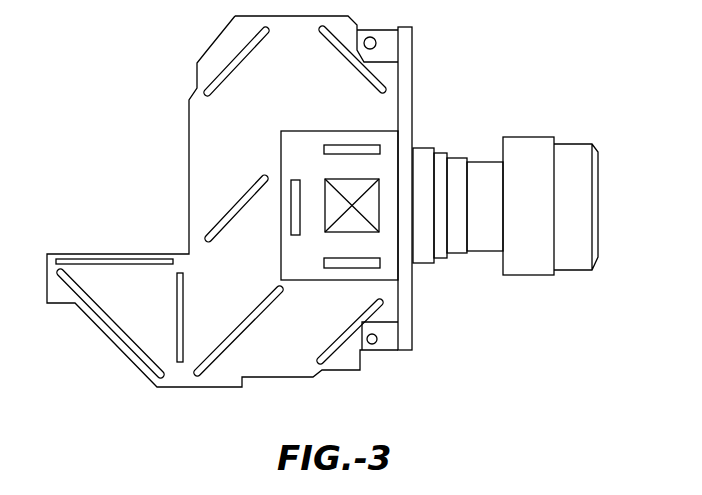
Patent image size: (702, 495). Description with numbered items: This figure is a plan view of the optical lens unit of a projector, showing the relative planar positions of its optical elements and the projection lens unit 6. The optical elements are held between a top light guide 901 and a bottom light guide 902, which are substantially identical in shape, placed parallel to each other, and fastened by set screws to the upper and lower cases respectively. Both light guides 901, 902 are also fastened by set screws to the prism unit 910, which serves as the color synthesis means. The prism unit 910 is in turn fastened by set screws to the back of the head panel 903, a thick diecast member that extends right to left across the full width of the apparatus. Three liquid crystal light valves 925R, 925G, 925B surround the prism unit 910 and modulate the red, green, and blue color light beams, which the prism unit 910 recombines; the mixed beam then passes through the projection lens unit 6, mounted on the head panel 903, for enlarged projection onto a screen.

The top light guide 901 is at (222, 201).
The bottom light guide 902 is at (189, 160).
The head panel 903 is at (408, 335).
The liquid crystal light valve 925B is at (363, 149).
The liquid crystal light valve 925G is at (293, 188).
The liquid crystal light valve 925R is at (373, 264).
The prism unit 910 is at (385, 178).
The projection lens unit 6 is at (582, 145).